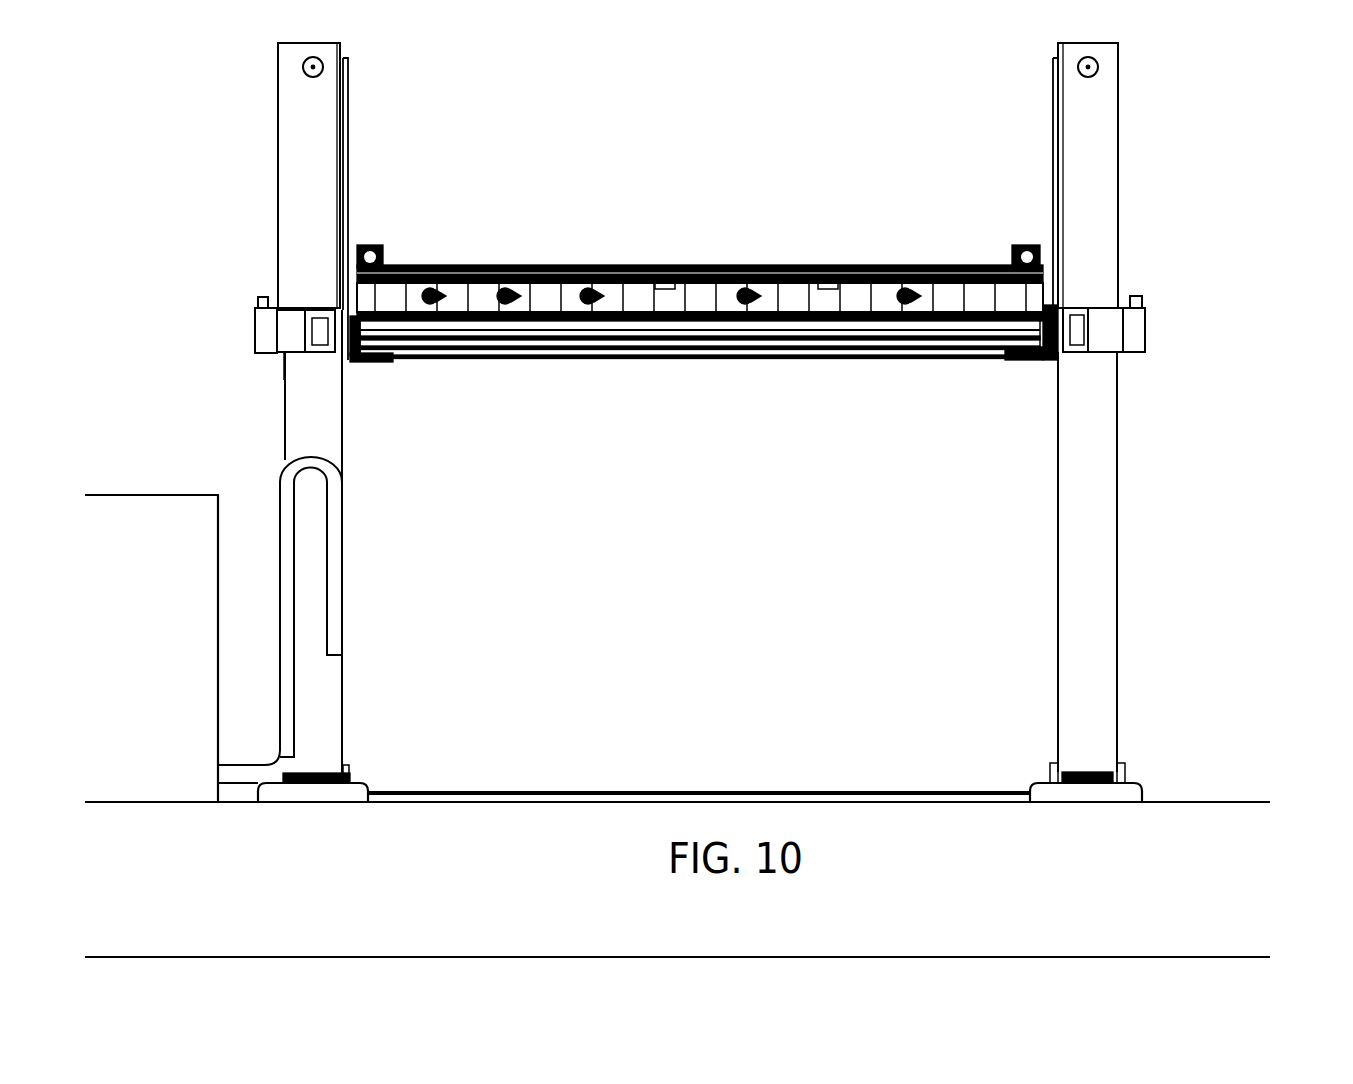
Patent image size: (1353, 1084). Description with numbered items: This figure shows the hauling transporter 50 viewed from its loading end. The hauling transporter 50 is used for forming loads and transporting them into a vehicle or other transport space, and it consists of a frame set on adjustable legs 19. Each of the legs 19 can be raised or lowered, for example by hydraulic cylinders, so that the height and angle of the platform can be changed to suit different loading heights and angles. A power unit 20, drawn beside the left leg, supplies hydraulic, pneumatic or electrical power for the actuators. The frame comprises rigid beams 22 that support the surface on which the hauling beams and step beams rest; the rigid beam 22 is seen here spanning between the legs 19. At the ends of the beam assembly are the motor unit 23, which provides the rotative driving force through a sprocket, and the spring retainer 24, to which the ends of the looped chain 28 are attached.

The adjustable legs 19 is at (1117, 497).
The power unit 20 is at (166, 510).
The rigid beams 22 is at (866, 302).
The motor unit 23 is at (980, 262).
The spring retainer 24 is at (372, 247).
The chain 28 is at (1145, 330).
The hauling transporter 50 is at (278, 207).